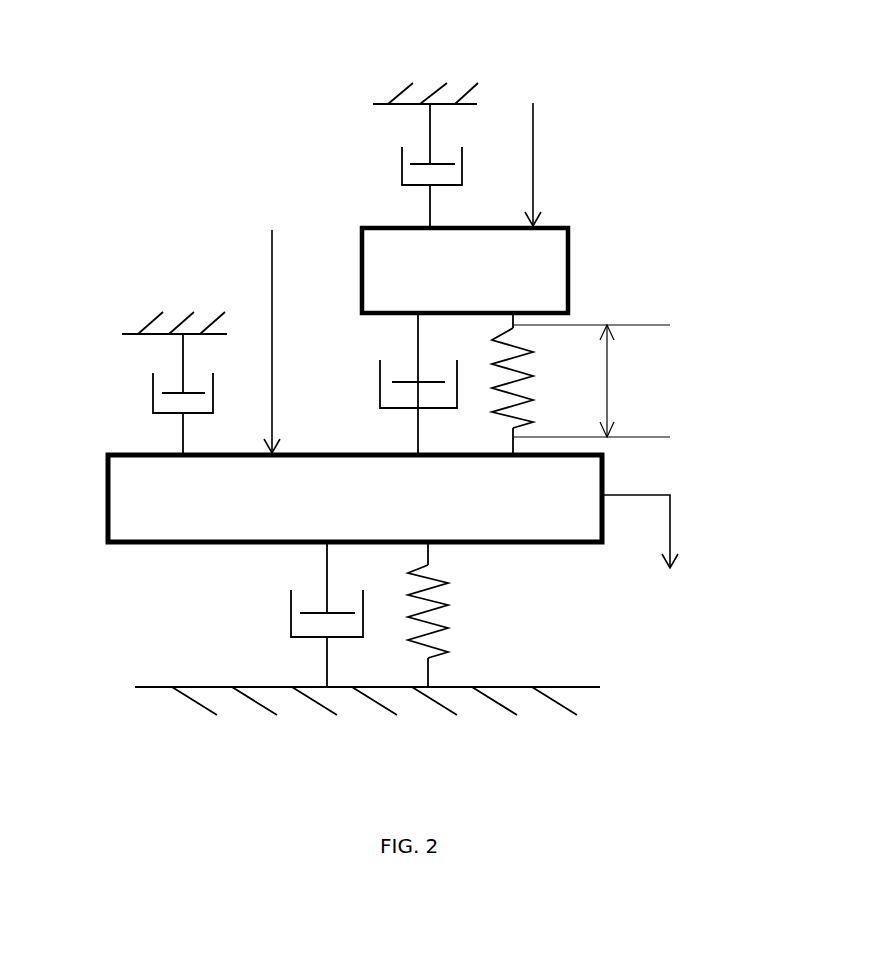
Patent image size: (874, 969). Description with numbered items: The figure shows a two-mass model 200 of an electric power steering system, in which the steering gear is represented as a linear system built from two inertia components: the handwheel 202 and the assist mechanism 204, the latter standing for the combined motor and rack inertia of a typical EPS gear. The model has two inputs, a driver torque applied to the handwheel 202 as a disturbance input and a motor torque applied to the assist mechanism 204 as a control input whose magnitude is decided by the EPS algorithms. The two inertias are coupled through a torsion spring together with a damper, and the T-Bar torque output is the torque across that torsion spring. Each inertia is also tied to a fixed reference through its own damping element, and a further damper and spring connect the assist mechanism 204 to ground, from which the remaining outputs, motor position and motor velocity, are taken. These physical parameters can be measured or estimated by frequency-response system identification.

The two-mass model 200 is at (789, 140).
The handwheel 202 is at (569, 258).
The assist mechanism 204 is at (603, 466).